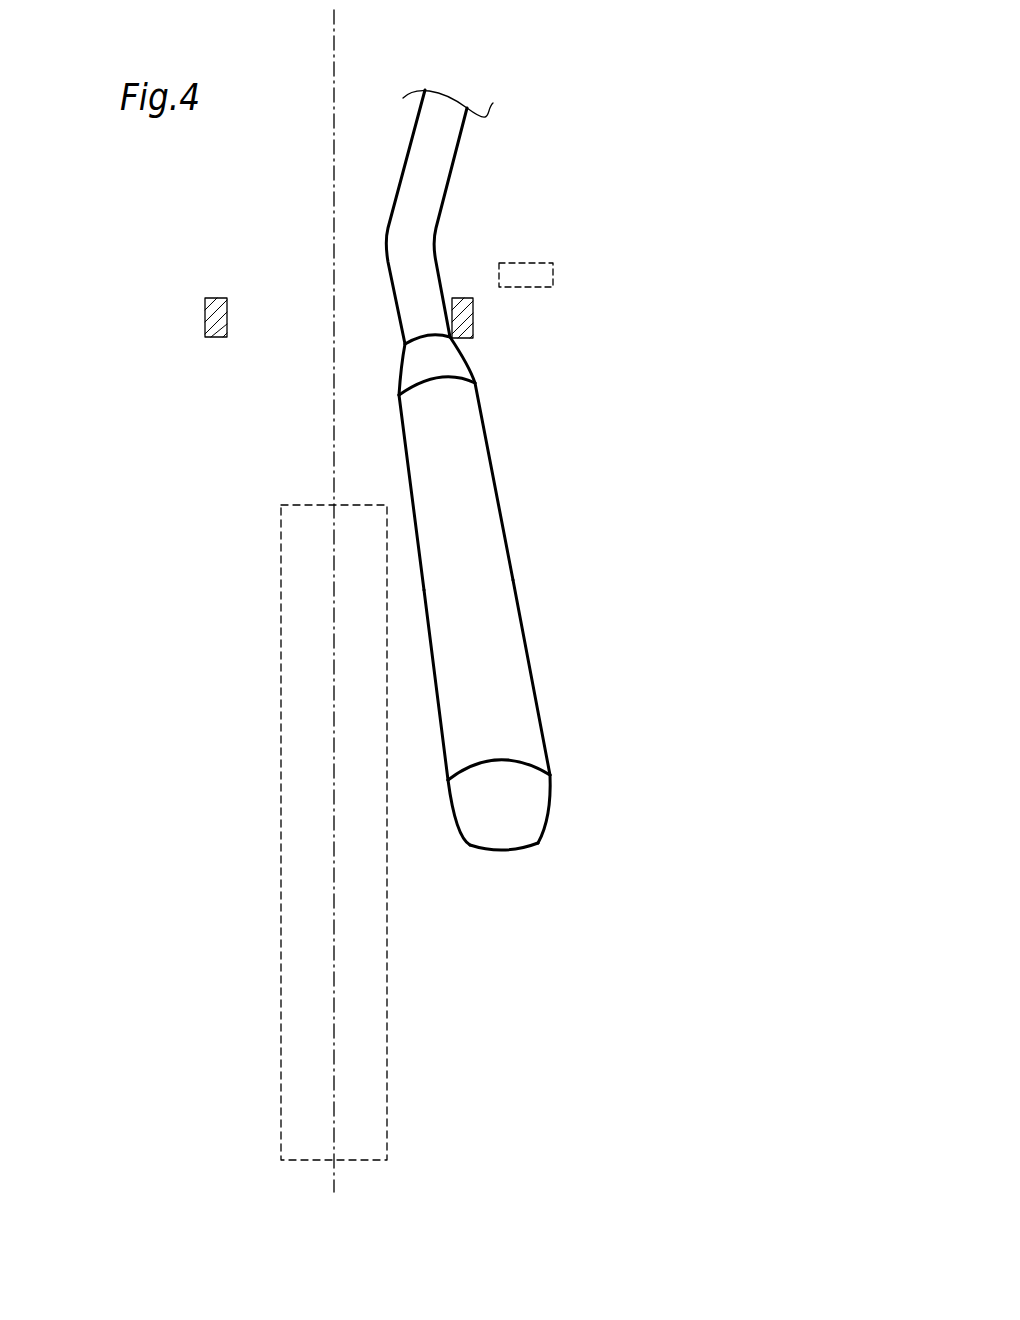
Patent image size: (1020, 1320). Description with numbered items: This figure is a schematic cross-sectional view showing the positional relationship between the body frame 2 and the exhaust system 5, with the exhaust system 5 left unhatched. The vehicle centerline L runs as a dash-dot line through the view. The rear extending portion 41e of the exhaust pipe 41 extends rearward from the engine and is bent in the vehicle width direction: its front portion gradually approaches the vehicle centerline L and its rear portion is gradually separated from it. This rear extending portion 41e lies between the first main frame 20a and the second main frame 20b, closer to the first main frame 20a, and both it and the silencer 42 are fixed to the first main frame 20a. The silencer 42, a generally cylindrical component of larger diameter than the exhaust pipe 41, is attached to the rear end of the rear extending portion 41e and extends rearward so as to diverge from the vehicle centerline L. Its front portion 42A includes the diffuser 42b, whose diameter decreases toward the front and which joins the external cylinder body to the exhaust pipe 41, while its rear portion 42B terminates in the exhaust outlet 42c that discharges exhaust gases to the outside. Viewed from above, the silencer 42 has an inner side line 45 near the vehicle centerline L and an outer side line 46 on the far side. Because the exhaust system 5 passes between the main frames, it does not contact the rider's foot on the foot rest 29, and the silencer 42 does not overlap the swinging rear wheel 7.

The vehicle centerline L is at (334, 52).
The exhaust pipe 41 is at (514, 214).
The rear extending portion 41e is at (428, 200).
The foot rest 29 is at (553, 264).
The second main frame 20b is at (205, 313).
The first main frame 20a is at (473, 318).
The body frame 2 is at (602, 297).
The diffuser 42b is at (467, 393).
The front portion of the silencer 42A is at (563, 425).
The silencer 42 is at (594, 687).
The rear portion of the silencer 42B is at (559, 669).
The outer side line 46 is at (545, 740).
The inner side line 45 is at (443, 753).
The exhaust outlet 42c is at (503, 850).
The exhaust system 5 is at (531, 865).
The rear wheel 7 is at (387, 1083).